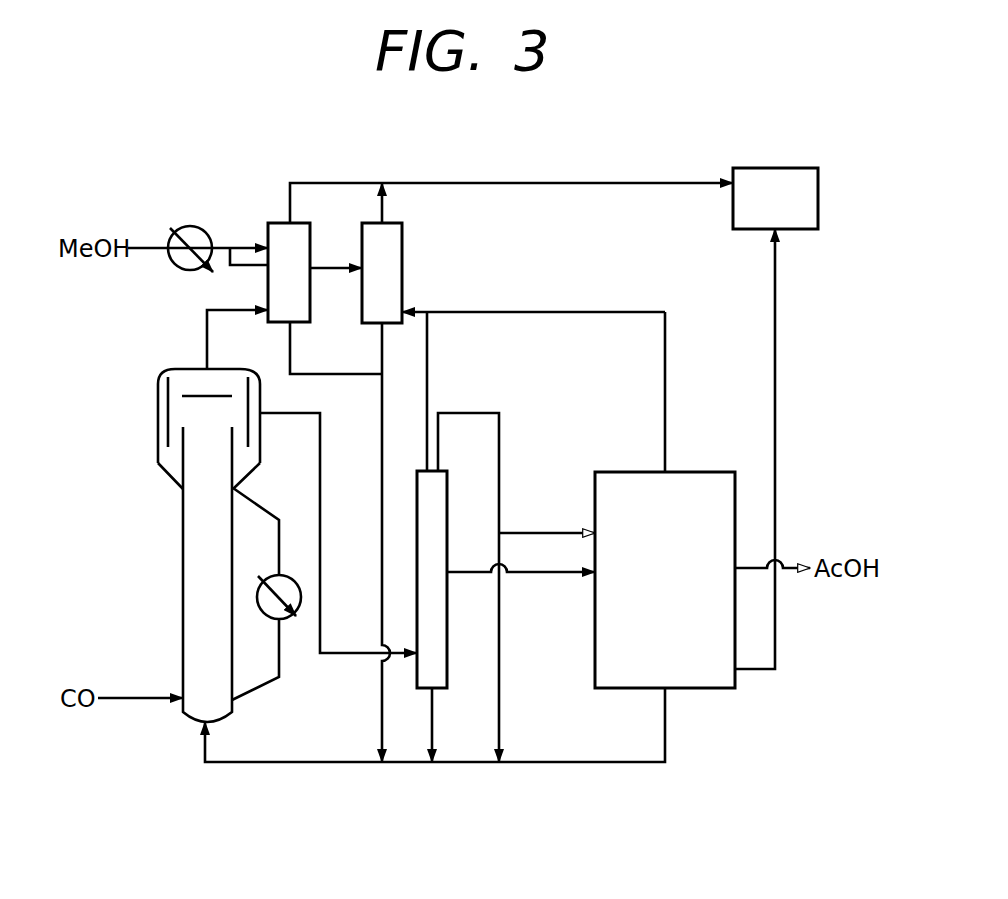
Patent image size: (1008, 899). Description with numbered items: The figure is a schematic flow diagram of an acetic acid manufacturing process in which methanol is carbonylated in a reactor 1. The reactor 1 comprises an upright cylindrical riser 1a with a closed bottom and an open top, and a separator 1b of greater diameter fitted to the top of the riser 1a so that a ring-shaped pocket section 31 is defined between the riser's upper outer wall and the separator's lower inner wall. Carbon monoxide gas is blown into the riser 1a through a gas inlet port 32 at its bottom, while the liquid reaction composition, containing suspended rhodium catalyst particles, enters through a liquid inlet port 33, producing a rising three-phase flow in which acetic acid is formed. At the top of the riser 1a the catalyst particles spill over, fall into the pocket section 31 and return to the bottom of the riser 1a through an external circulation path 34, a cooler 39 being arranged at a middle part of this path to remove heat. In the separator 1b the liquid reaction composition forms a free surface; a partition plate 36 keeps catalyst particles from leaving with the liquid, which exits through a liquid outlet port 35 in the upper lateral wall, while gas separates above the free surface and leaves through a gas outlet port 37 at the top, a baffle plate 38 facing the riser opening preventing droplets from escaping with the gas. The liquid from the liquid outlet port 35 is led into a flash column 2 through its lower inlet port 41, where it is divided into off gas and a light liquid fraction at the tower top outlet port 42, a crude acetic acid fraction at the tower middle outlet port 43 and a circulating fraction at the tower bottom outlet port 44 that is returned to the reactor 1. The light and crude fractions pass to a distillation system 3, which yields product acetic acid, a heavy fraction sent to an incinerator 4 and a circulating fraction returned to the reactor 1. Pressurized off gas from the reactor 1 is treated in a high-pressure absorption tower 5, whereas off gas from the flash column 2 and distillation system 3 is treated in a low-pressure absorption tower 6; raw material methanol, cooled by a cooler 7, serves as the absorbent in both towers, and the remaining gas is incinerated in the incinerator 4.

The reactor 1 is at (241, 561).
The riser 1a is at (183, 648).
The separator 1b is at (171, 404).
The flash column 2 is at (447, 620).
The distillation system 3 is at (590, 655).
The incinerator 4 is at (818, 190).
The high-pressure absorption tower 5 is at (272, 223).
The low-pressure absorption tower 6 is at (402, 243).
The cooler 7 is at (175, 265).
The pocket section 31 is at (173, 467).
The gas inlet port 32 is at (183, 705).
The liquid inlet port 33 is at (205, 728).
The external circulation path 34 is at (258, 497).
The liquid outlet port 35 is at (262, 411).
The partition plate 36 is at (168, 410).
The gas outlet port 37 is at (207, 368).
The baffle plate 38 is at (196, 394).
The cooler 39 is at (282, 574).
The lower inlet port 41 is at (417, 656).
The tower top outlet port 42 is at (440, 470).
The tower middle outlet port 43 is at (447, 570).
The tower bottom outlet port 44 is at (437, 688).